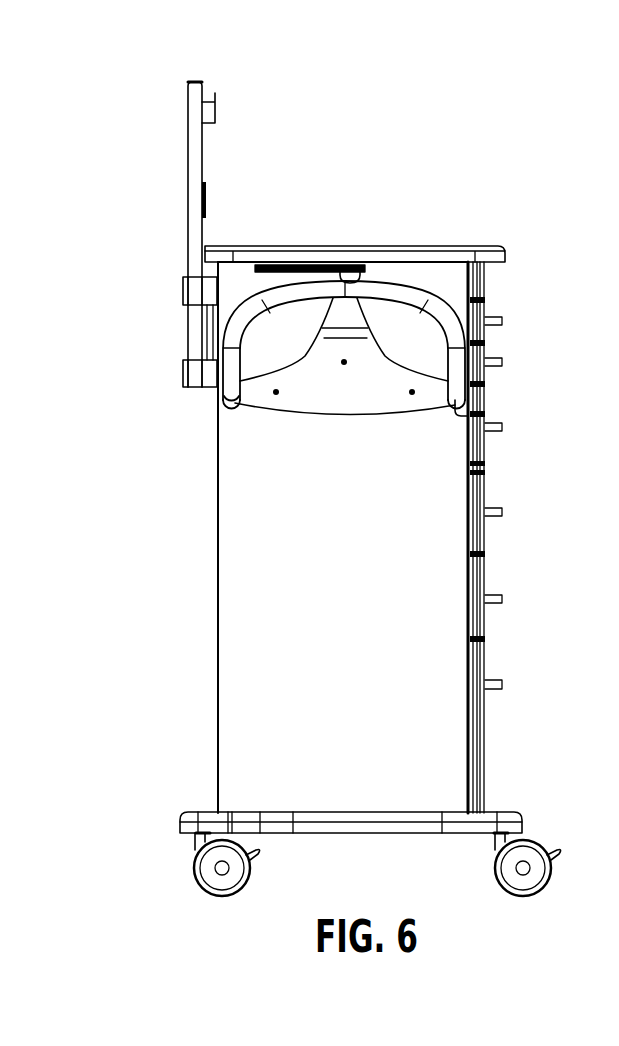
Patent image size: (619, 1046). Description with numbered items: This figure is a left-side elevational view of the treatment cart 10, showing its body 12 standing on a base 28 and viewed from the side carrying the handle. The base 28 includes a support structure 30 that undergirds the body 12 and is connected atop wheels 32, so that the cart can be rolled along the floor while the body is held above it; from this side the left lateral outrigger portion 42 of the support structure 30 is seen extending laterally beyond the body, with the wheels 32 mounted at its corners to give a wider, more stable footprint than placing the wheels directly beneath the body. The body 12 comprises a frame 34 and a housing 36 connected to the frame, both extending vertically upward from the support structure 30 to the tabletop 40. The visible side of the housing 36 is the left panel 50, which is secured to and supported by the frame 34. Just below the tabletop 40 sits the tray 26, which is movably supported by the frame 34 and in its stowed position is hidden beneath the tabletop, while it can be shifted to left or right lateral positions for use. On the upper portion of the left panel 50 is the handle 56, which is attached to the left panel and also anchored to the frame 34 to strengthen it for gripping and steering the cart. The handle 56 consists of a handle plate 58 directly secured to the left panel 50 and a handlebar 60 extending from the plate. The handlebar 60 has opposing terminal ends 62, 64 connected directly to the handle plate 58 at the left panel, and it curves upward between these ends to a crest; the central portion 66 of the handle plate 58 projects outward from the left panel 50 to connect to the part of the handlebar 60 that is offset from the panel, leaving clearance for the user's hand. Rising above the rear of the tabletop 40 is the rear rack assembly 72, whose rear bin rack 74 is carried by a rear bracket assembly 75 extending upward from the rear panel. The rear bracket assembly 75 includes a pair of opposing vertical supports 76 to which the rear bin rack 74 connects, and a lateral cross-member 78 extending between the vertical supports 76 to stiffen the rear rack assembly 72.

The treatment cart 10 is at (553, 110).
The body 12 is at (126, 531).
The tray 26 is at (347, 281).
The base 28 is at (160, 815).
The support structure 30 is at (333, 836).
The wheels 32 is at (242, 868).
The frame 34 is at (218, 485).
The housing 36 is at (280, 637).
The tabletop 40 is at (460, 246).
The left lateral outrigger portion 42 is at (417, 831).
The left panel 50 is at (422, 625).
The handle 56 is at (452, 300).
The handle plate 58 is at (416, 409).
The handlebar 60 is at (458, 330).
The terminal end 62 is at (238, 401).
The terminal end 64 is at (468, 418).
The central portion 66 is at (331, 336).
The rear rack assembly 72 is at (167, 93).
The rear bin rack 74 is at (212, 113).
The rear bracket assembly 75 is at (181, 290).
The vertical supports 76 is at (190, 139).
The lateral cross-member 78 is at (208, 195).